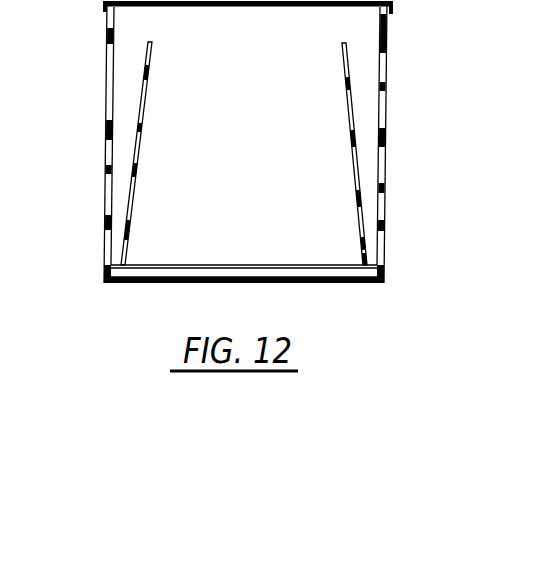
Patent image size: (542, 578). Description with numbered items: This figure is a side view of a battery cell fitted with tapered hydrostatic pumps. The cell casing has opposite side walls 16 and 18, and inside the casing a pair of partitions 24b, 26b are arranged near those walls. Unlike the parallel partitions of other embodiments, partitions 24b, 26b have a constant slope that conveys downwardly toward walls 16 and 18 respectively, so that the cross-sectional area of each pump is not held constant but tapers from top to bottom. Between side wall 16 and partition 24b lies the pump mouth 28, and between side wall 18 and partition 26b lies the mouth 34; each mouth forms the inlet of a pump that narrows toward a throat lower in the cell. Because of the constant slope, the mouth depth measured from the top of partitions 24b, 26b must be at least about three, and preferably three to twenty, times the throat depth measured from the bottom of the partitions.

The mouth 34 is at (133, 45).
The pump mouth 28 is at (365, 48).
The side wall 18 is at (107, 62).
The side wall 16 is at (387, 72).
The partition 26b is at (141, 110).
The partition 24b is at (351, 117).